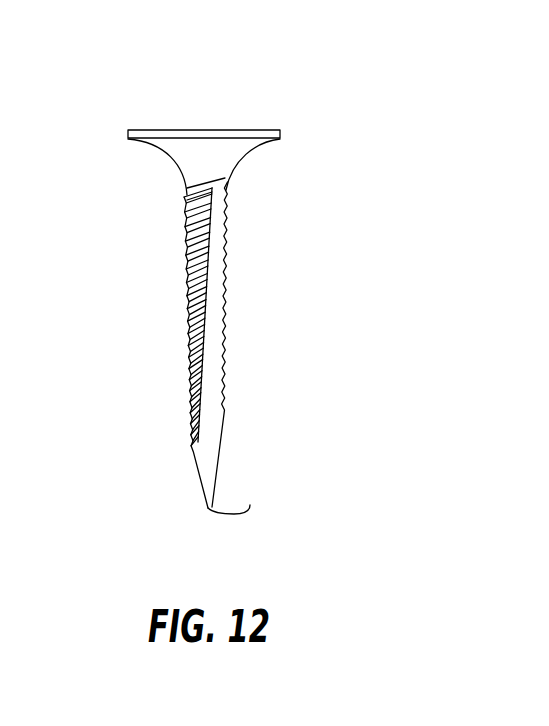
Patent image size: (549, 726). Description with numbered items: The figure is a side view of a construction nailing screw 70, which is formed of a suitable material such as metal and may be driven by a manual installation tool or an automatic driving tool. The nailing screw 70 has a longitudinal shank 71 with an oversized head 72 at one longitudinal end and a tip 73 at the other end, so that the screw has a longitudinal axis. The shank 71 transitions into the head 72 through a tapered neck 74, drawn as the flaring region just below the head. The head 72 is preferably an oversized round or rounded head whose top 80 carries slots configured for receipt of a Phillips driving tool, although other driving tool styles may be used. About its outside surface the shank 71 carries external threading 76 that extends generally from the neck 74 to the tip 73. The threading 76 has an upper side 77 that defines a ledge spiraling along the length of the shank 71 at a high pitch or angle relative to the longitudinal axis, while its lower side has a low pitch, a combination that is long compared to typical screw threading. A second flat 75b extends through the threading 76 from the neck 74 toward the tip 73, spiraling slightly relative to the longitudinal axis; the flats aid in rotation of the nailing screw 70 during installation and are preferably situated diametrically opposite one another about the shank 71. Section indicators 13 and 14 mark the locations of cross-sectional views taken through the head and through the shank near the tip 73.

The section line 13- 13 is at (312, 96).
The section line 14- 14 is at (272, 472).
The nailing screw 70 is at (400, 160).
The shank 71 is at (186, 366).
The head 72 is at (128, 139).
The tip 73 is at (250, 505).
The tapered neck 74 is at (225, 157).
The second flat 75b is at (216, 319).
The external threading 76 is at (183, 283).
The upper side 77 is at (188, 213).
The top 80 is at (206, 130).